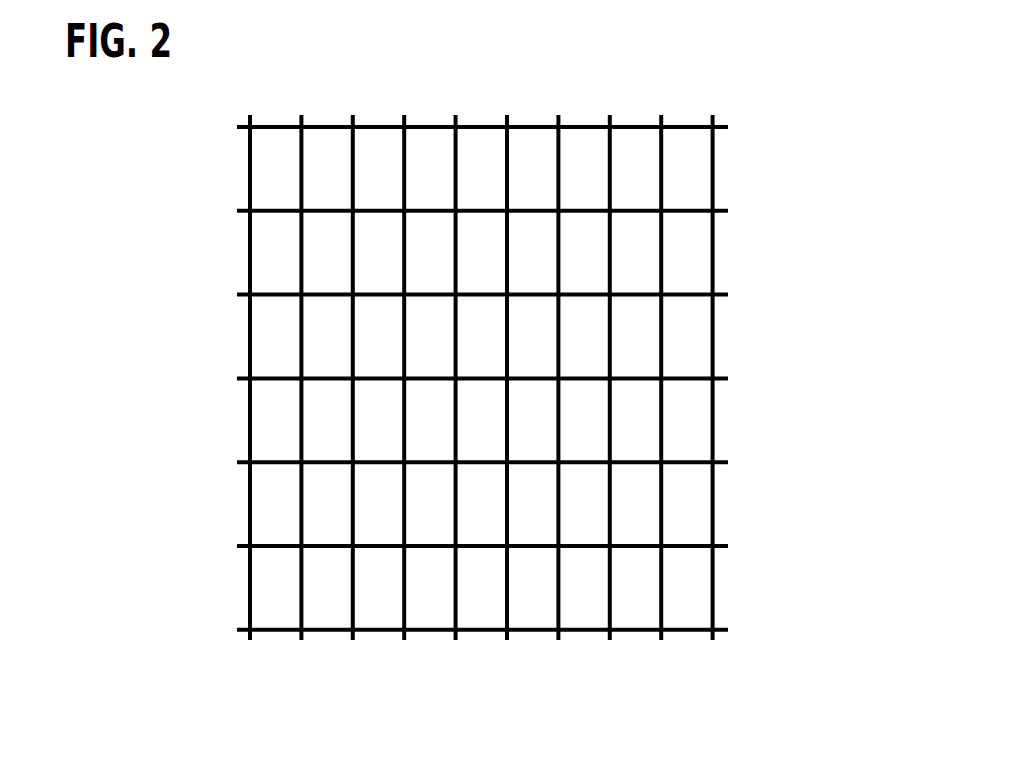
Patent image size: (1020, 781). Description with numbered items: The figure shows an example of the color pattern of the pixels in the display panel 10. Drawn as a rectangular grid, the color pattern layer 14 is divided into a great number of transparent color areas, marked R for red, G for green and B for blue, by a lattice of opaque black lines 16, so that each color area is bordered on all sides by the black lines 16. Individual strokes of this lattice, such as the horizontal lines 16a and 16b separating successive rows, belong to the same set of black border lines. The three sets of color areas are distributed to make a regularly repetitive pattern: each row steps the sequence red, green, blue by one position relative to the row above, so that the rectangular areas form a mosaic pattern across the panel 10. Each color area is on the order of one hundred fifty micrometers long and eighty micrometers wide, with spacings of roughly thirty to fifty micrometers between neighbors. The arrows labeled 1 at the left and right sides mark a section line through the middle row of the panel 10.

The display panel 10 is at (527, 343).
The color pattern layer 14 is at (463, 148).
The black lines 16 is at (717, 177).
The row of pixels 16a is at (663, 445).
The adjacent row of pixels 16b is at (635, 543).
The section line 1- 1 is at (237, 337).